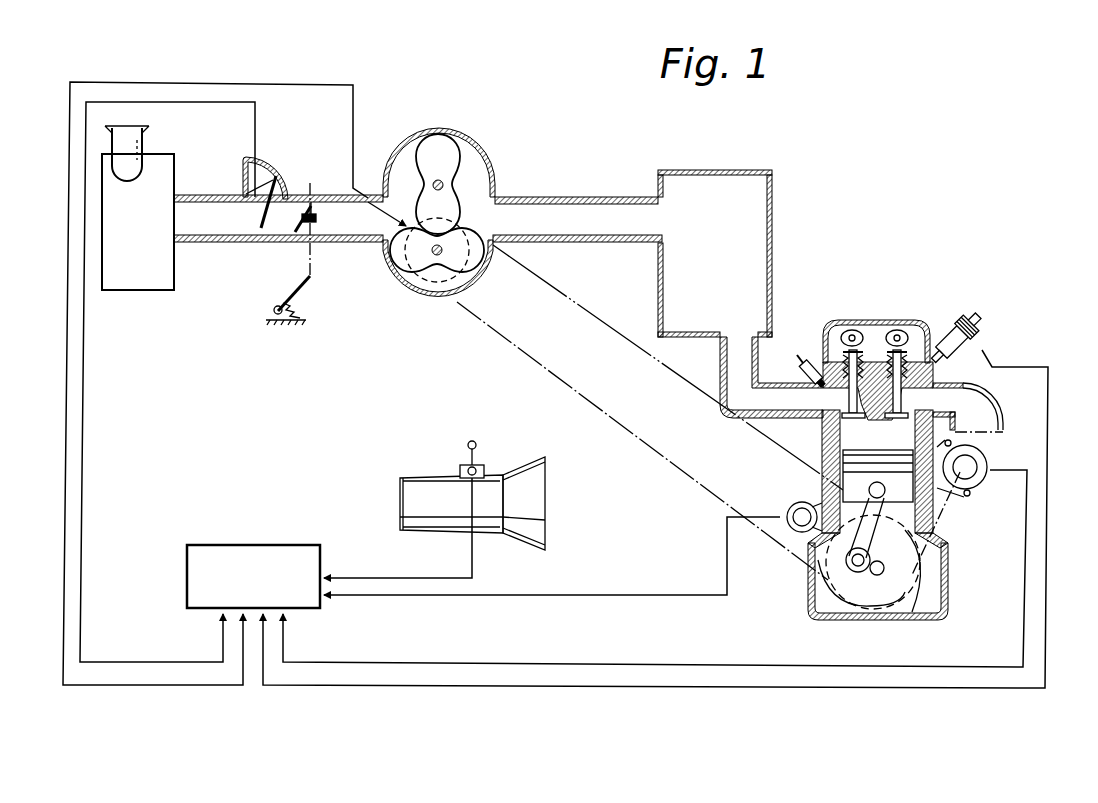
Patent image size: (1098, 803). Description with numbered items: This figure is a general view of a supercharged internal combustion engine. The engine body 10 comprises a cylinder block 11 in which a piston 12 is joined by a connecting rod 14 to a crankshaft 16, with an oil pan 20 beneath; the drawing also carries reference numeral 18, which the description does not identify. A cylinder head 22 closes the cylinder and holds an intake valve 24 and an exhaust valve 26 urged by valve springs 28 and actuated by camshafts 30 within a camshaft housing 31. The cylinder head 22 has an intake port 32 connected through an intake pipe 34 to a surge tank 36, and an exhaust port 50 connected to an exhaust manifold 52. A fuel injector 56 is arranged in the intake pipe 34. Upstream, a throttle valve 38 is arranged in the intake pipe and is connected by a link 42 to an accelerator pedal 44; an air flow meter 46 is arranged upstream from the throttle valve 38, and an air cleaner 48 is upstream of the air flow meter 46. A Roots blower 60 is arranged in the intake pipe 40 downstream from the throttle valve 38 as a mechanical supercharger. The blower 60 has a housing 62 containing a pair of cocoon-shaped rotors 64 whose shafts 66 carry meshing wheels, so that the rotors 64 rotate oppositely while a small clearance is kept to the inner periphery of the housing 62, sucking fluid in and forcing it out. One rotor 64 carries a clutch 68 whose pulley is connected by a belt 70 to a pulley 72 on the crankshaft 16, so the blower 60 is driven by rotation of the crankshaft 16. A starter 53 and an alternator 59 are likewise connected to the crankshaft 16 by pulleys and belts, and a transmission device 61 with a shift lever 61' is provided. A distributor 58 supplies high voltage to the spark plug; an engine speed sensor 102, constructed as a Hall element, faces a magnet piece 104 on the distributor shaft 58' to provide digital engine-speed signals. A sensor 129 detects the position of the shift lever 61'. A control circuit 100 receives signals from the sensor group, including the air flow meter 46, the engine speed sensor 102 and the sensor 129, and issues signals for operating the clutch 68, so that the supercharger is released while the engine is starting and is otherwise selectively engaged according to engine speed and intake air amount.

The engine body 10 is at (885, 447).
The cylinder block 11 is at (947, 513).
The piston 12 is at (817, 490).
The connecting rod 14 is at (948, 563).
The crankshaft 16 is at (905, 600).
The connecting rod 18 is at (810, 588).
The oil pan 20 is at (826, 621).
The cylinder head 22 is at (794, 350).
The intake valve 24 is at (823, 447).
The exhaust valve 26 is at (895, 420).
The valve springs 28 is at (861, 354).
The camshafts 30 is at (849, 328).
The camshaft housing 31 is at (904, 320).
The intake port 32 is at (820, 425).
The intake pipe 34 is at (720, 365).
The surge tank 36 is at (730, 170).
The throttle valve 38 is at (311, 200).
The intake pipe 40 is at (372, 195).
The link 42 is at (309, 261).
The accelerator pedal 44 is at (286, 287).
The air flow meter 46 is at (271, 166).
The air cleaner 48 is at (139, 292).
The exhaust port 50 is at (988, 398).
The exhaust manifold 52 is at (998, 413).
The starter 53 is at (790, 528).
The fuel injector 56 is at (806, 372).
The distributor 58 is at (975, 305).
The distributor shaft 58' is at (1001, 312).
The alternator 59 is at (985, 461).
The Roots blower 60 is at (443, 217).
The transmission device 61 is at (472, 500).
The shift lever 61' is at (439, 435).
The housing 62 is at (492, 161).
The rotors 64 is at (437, 150).
The shafts 66 is at (445, 186).
The clutch 68 is at (443, 277).
The belt 70 is at (630, 437).
The pulley 72 is at (866, 620).
The control circuit 100 is at (262, 545).
The engine speed sensor 102 is at (982, 352).
The magnet piece 104 is at (941, 326).
The sensor 129 is at (487, 473).